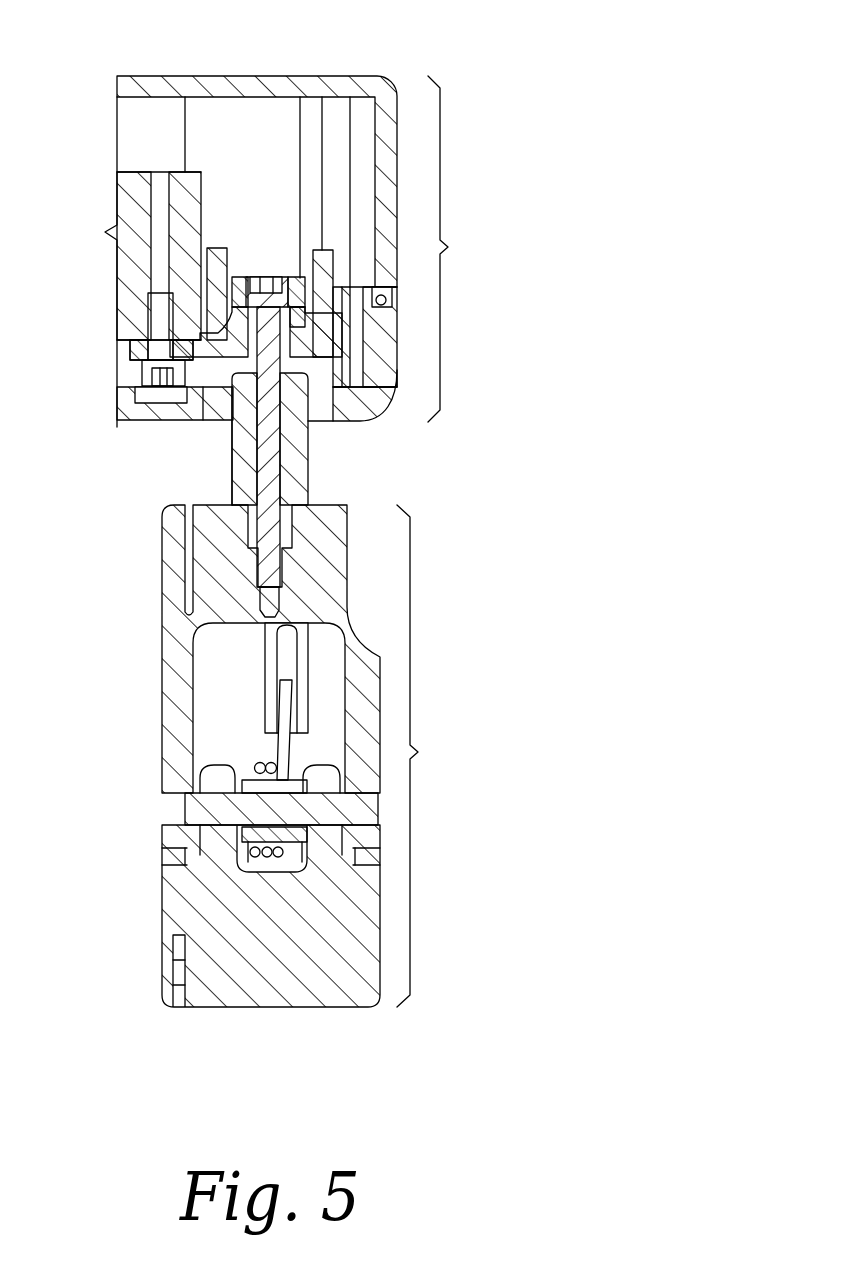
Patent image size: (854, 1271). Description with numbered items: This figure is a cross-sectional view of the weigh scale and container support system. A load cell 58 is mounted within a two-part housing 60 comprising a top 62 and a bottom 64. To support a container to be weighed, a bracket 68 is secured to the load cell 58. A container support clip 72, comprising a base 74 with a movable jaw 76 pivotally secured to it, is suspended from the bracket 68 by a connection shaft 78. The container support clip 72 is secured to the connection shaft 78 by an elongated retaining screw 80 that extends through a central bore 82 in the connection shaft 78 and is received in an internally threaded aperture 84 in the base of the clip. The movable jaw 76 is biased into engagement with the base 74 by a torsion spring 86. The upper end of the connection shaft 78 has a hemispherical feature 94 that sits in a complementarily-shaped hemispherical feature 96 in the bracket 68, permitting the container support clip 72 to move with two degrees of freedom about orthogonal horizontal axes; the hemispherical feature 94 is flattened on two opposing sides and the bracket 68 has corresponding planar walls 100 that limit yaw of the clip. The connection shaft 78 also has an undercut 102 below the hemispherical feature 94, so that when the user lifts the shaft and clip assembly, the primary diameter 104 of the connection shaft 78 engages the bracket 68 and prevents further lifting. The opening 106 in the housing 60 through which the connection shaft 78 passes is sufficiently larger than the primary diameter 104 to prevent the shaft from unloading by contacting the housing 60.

The load cell 58 is at (120, 296).
The housing 60 is at (452, 249).
The top 62 is at (303, 76).
The bottom 64 is at (145, 422).
The bracket 68 is at (323, 268).
The container support clip 72 is at (421, 756).
The base 74 is at (165, 672).
The movable jaw 76 is at (240, 1000).
The connection shaft 78 is at (232, 468).
The elongated retaining screw 80 is at (265, 366).
The central bore 82 is at (278, 435).
The internally threaded aperture 84 is at (270, 565).
The torsion spring 86 is at (256, 766).
The hemispherical feature 94 is at (300, 318).
The hemispherical feature 96 is at (232, 292).
The planar walls 100 is at (217, 248).
The undercut 102 is at (292, 345).
The primary diameter 104 is at (295, 472).
The opening 106 is at (330, 410).